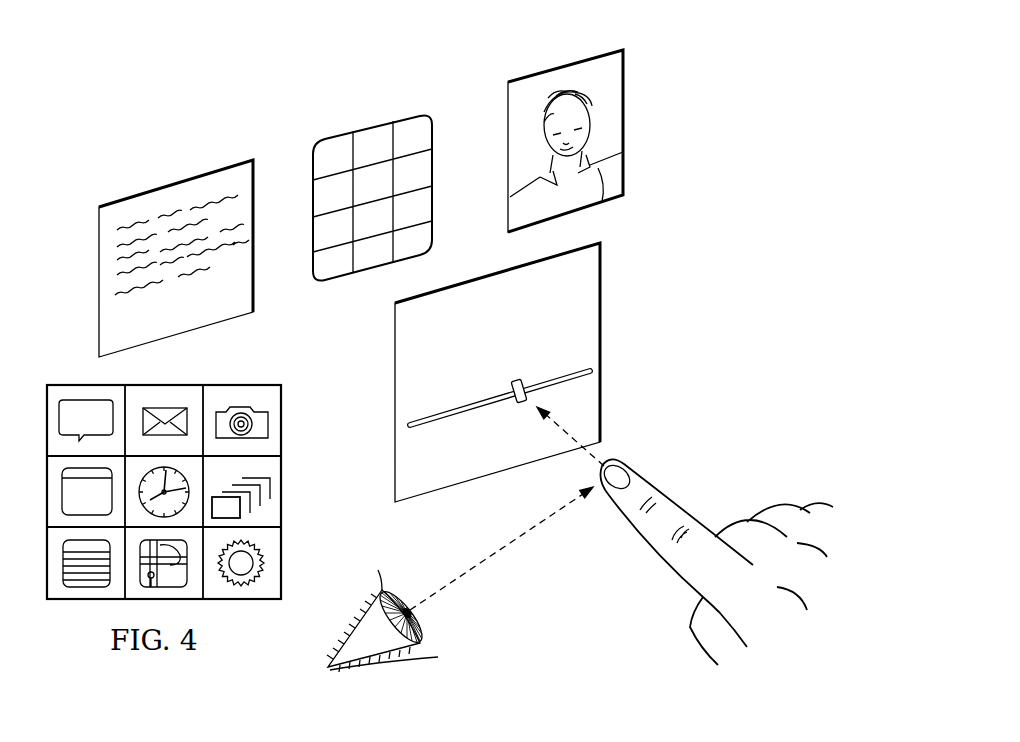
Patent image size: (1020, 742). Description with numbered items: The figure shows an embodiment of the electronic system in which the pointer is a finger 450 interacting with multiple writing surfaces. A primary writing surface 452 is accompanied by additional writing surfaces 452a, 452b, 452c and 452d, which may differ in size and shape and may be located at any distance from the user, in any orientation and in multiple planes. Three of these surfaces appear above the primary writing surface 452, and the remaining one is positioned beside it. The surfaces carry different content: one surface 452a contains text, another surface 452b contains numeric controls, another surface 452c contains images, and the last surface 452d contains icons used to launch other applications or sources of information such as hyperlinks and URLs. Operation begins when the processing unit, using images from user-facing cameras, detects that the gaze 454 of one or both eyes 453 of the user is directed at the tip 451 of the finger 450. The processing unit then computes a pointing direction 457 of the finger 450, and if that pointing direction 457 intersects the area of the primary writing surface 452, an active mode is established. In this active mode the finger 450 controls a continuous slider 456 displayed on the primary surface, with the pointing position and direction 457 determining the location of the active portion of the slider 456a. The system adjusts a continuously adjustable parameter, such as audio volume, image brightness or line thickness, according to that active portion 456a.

The finger 450 is at (716, 538).
The tip of the finger 451 is at (612, 461).
The primary writing surface 452 is at (393, 402).
The writing surface containing text 452a is at (184, 182).
The writing surface containing numeric controls 452b is at (370, 124).
The writing surface containing images 452c is at (567, 62).
The writing surface containing icons 452d is at (70, 384).
The eye 453 is at (421, 633).
The gaze 454 is at (496, 556).
The slider 456 is at (468, 403).
The active portion of the slider 456a is at (514, 380).
The pointing direction 457 is at (562, 431).